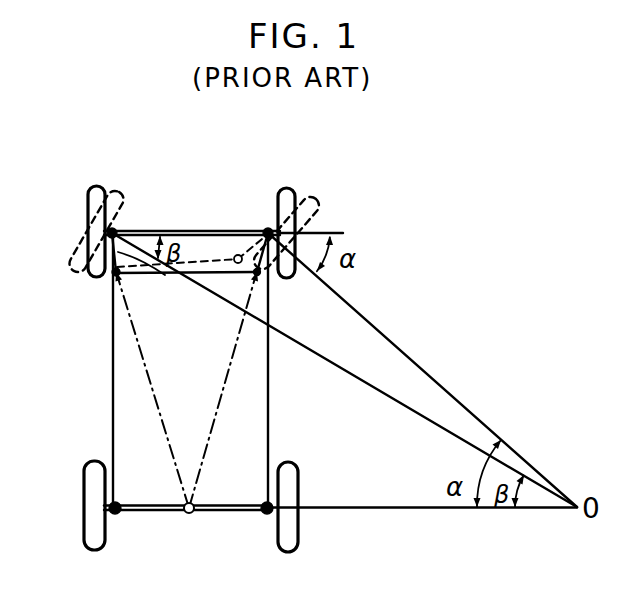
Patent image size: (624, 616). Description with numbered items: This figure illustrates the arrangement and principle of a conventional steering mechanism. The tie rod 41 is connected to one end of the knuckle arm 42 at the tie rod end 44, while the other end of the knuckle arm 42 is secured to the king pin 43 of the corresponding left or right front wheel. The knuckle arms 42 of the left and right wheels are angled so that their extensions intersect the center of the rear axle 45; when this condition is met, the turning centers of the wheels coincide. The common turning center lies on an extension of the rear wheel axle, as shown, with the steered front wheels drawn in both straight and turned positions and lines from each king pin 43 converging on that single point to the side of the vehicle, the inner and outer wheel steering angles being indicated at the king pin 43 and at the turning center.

The tie rod 41 is at (193, 232).
The knuckle arm 42 is at (236, 263).
The king pin 43 is at (265, 231).
The tie rod end 44 is at (114, 275).
The rear axle 45 is at (197, 511).